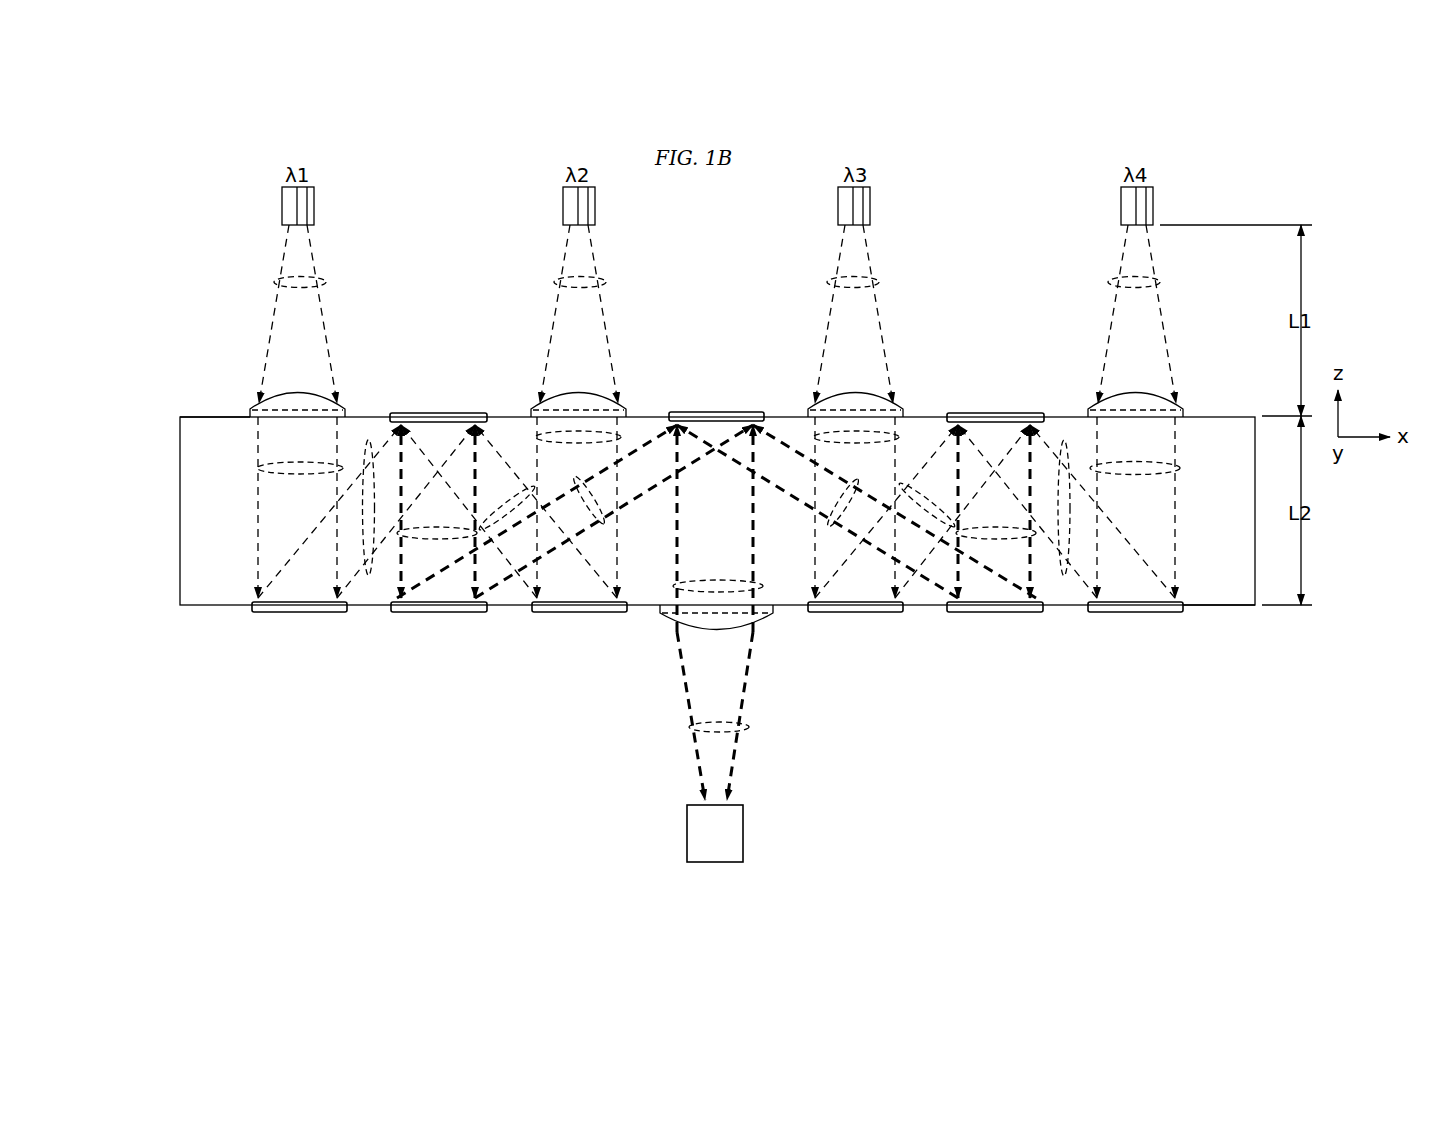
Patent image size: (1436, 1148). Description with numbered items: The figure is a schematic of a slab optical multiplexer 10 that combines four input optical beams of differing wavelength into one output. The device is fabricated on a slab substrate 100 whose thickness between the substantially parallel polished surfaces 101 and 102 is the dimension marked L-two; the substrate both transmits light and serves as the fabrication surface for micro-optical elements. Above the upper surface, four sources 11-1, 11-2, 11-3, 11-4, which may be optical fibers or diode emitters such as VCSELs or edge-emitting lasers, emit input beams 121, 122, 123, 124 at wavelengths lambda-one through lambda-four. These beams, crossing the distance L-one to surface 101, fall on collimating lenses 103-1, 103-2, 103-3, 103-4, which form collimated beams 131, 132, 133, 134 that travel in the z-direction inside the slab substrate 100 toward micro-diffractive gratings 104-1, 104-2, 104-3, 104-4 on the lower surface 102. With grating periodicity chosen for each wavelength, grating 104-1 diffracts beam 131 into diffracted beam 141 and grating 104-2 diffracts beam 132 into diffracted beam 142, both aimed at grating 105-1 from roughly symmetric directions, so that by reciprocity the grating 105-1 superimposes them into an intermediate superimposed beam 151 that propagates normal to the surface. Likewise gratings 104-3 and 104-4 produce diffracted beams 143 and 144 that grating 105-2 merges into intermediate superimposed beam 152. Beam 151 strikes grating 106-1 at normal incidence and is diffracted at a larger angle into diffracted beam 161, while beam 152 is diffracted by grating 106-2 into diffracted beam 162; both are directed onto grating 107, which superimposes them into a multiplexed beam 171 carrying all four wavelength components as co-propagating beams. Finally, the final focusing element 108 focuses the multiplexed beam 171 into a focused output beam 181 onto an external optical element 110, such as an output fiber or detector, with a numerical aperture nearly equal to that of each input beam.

The slab optical multiplexer 10 is at (928, 780).
The source 11-1 is at (282, 206).
The source 11-2 is at (563, 206).
The source 11-3 is at (871, 206).
The source 11-4 is at (1153, 206).
The slab substrate 100 is at (1255, 520).
The polished surface 101 is at (195, 417).
The polished surface 102 is at (1236, 606).
The lens 103-1 is at (280, 398).
The lens 103-2 is at (562, 398).
The lens 103-3 is at (862, 397).
The lens 103-4 is at (1150, 397).
The micro-diffractive grating 104-1 is at (294, 612).
The micro-diffractive grating 104-2 is at (553, 612).
The micro-diffractive grating 104-3 is at (890, 612).
The micro-diffractive grating 104-4 is at (1142, 612).
The micro-diffractive grating 105-1 is at (433, 413).
The micro-diffractive grating 105-2 is at (1002, 413).
The micro-diffractive grating 106-1 is at (412, 612).
The micro-diffractive grating 106-2 is at (1022, 612).
The micro-diffractive grating 107 is at (718, 412).
The final focusing element 108 is at (768, 625).
The external optical element 110 is at (744, 835).
The input beam 121 is at (276, 283).
The input beam 122 is at (555, 283).
The input beam 123 is at (878, 283).
The input beam 124 is at (1160, 283).
The collimated beam 131 is at (258, 467).
The collimated beam 132 is at (622, 437).
The collimated beam 133 is at (811, 437).
The collimated beam 134 is at (1181, 467).
The diffracted beam 141 is at (368, 577).
The diffracted beam 142 is at (524, 478).
The diffracted beam 143 is at (912, 478).
The diffracted beam 144 is at (1064, 577).
The intermediate superimposed beam 151 is at (430, 543).
The intermediate superimposed beam 152 is at (1000, 542).
The diffracted beam 161 is at (608, 522).
The diffracted beam 162 is at (830, 523).
The multiplexed beam 171 is at (675, 587).
The focused output beam 181 is at (688, 727).